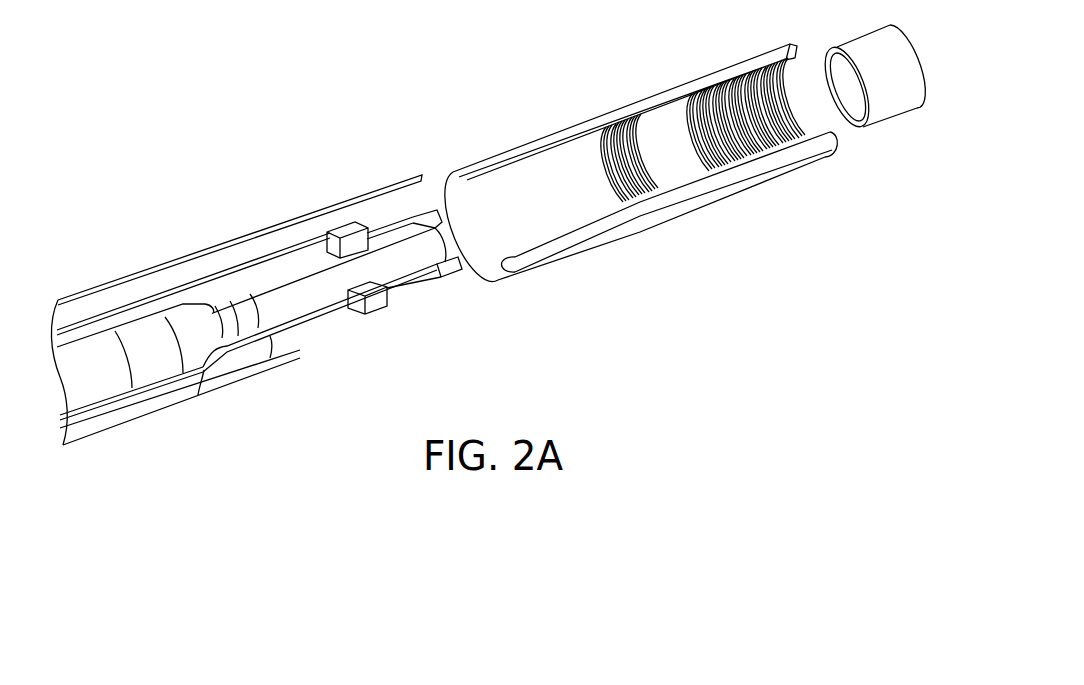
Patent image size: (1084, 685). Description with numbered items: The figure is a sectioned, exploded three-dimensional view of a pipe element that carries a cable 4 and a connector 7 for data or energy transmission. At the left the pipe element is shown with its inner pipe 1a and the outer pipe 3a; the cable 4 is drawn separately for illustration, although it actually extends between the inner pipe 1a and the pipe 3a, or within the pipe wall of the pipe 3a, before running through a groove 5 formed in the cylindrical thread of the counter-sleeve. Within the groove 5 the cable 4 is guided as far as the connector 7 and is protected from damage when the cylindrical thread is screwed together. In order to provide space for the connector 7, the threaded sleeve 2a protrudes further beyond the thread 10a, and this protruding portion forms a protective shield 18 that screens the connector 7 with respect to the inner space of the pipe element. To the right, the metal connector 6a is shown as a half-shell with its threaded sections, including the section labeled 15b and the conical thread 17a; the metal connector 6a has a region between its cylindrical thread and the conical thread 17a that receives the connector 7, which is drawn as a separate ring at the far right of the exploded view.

The inner pipe 1a is at (137, 333).
The threaded sleeve 2a is at (227, 356).
The pipe 3a is at (159, 384).
The cable 4 is at (277, 218).
The groove 5 is at (341, 230).
The metal connector 6a is at (663, 105).
The connector 7 is at (890, 93).
The thread 10a is at (368, 307).
The thread section 15b is at (640, 200).
The conical thread 17a is at (750, 130).
The protective shield 18 is at (418, 280).